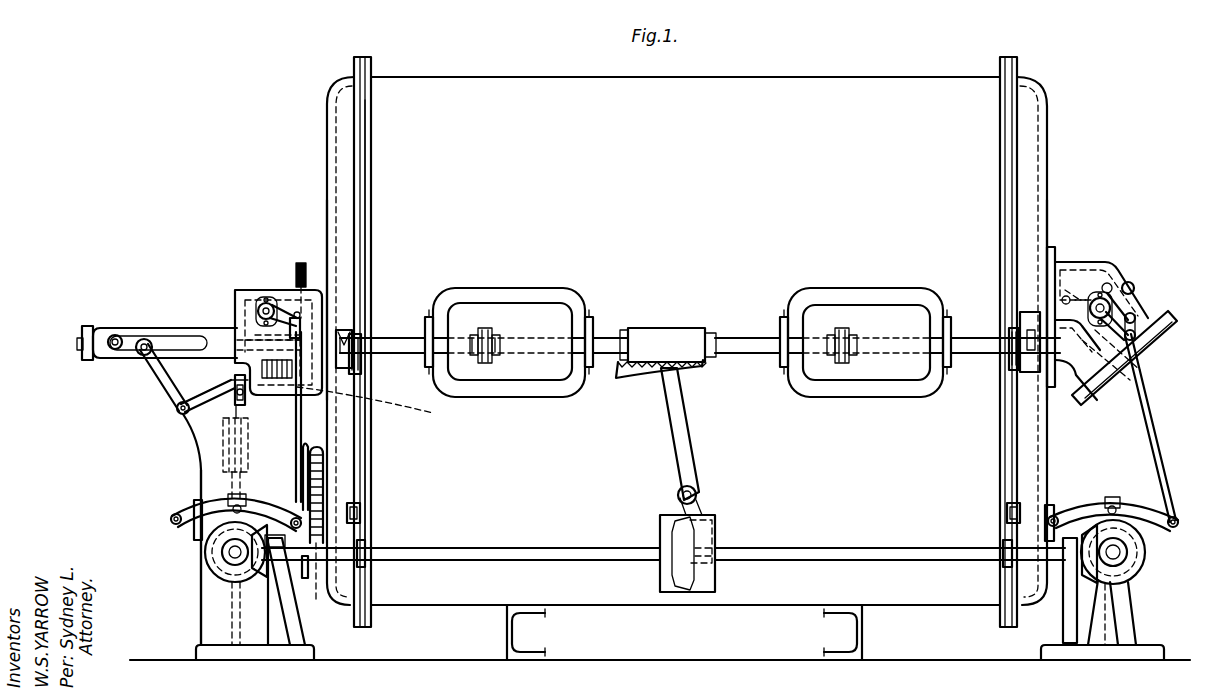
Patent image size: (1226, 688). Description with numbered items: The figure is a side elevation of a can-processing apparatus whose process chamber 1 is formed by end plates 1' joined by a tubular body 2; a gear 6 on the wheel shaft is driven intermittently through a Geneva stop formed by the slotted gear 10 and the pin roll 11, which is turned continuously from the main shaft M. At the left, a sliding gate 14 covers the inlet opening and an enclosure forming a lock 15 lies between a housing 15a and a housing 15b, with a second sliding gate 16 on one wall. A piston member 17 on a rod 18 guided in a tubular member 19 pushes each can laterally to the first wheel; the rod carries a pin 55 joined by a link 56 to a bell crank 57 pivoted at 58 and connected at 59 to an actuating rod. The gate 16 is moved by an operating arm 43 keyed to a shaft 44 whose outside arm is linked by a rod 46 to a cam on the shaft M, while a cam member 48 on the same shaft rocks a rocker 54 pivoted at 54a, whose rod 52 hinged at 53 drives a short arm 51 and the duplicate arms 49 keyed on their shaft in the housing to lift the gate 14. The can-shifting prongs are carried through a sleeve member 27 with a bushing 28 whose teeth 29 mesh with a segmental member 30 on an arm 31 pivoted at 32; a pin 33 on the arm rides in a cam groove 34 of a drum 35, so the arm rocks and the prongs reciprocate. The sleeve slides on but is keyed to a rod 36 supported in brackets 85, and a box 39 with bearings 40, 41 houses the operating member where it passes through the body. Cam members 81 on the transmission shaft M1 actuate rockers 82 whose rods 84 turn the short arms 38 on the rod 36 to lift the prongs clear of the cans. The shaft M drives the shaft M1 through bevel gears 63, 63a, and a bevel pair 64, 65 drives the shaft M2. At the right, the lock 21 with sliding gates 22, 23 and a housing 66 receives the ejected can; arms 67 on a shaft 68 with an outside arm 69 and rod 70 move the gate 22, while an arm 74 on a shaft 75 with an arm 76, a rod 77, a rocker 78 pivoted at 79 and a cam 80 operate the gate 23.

The process chamber 1 is at (687, 331).
The end plates 1' is at (686, 268).
The tubular body 2 is at (835, 77).
The gear 6 is at (294, 316).
The slotted gear 10 is at (323, 466).
The pin roll 11 is at (306, 578).
The sliding gate 14 is at (366, 275).
The lock 15 is at (284, 305).
The housing 15a is at (295, 312).
The housing 15b is at (248, 422).
The second sliding gate 16 is at (355, 338).
The piston member 17 is at (235, 300).
The rod 18 is at (80, 340).
The tubular member 19 is at (102, 328).
The lock 21 is at (1068, 262).
The sliding gate 22 is at (1047, 278).
The sliding gate 23 is at (1108, 382).
The sleeve member 27 is at (711, 332).
The bushing 28 is at (666, 326).
The teeth 29 is at (633, 330).
The segmental member 30 is at (635, 380).
The arm 31 is at (676, 462).
The pivot 32 is at (697, 493).
The pin 33 is at (708, 545).
The cam groove 34 is at (716, 584).
The drum 35 is at (658, 576).
The rod 36 is at (985, 354).
The short arms 38 is at (362, 368).
The box 39 is at (503, 310).
The bearing 40 is at (427, 368).
The bearing 41 is at (590, 368).
The operating arm 43 is at (380, 405).
The shaft 44 is at (233, 380).
The rod 46 is at (236, 414).
The cam member 48 is at (212, 560).
The arms 49 is at (300, 262).
The short arm 51 is at (262, 302).
The rod 52 is at (296, 440).
The hinged connection 53 is at (303, 495).
The rocker 54 is at (248, 500).
The pivot 54a is at (172, 524).
The pin 55 is at (115, 334).
The link 56 is at (144, 338).
The bell crank 57 is at (160, 378).
The pivot 58 is at (181, 412).
The connection 59 is at (180, 408).
The bevel gear 63 is at (222, 578).
The bevel gear 63a is at (262, 575).
The bevel gear 64 is at (1090, 577).
The bevel gear 65 is at (1136, 565).
The housing 66 is at (1110, 283).
The arms 67 is at (1080, 290).
The shaft 68 is at (1102, 296).
The arm 69 is at (1130, 283).
The rod 70 is at (1138, 334).
The arm 74 is at (1101, 338).
The shaft 75 is at (1077, 360).
The arm 76 is at (1136, 316).
The rod 77 is at (1155, 406).
The rocker 78 is at (1108, 508).
The pivot 79 is at (1056, 515).
The cam 80 is at (1118, 512).
The cam members 81 is at (366, 540).
The rockers 82 is at (360, 512).
The rod 84 is at (372, 430).
The brackets 85 is at (350, 335).
The main shaft M is at (222, 552).
The transmission shaft M1 is at (880, 554).
The shaft M2 is at (1130, 550).